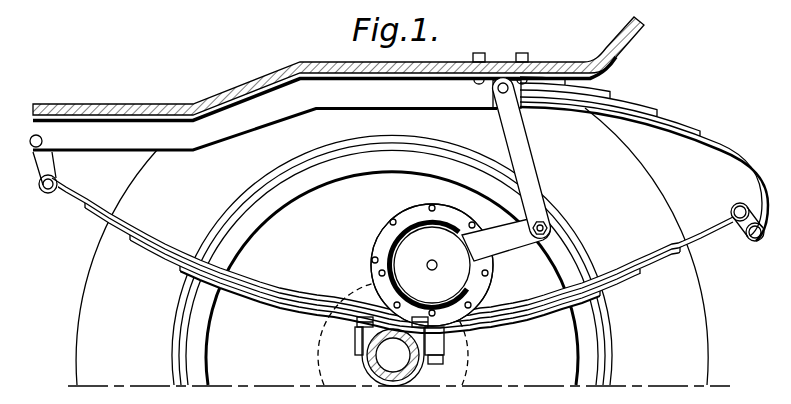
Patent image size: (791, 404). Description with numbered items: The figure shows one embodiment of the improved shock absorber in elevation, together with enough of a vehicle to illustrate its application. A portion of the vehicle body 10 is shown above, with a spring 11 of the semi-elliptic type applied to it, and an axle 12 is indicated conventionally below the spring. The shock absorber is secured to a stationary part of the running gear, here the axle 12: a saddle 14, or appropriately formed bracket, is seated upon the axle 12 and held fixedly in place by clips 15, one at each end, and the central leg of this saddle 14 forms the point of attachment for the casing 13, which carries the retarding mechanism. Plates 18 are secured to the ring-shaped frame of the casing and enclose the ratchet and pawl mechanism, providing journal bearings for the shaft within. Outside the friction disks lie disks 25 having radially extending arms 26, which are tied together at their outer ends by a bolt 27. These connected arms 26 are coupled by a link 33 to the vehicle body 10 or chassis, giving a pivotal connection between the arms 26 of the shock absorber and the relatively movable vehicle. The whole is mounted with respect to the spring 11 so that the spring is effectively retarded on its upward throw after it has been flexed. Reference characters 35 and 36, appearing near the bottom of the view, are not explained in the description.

The vehicle body 10 is at (414, 63).
The spring 11 is at (671, 108).
The axle 12 is at (357, 365).
The casing 13 is at (417, 203).
The saddle 14 is at (478, 338).
The clips 15 is at (421, 373).
The plates 18 is at (378, 248).
The disks 25 is at (432, 265).
The arms 26 is at (510, 249).
The bolt 27 is at (552, 228).
The link 33 is at (530, 146).
The ground line 35 is at (565, 395).
The ground line 36 is at (234, 395).